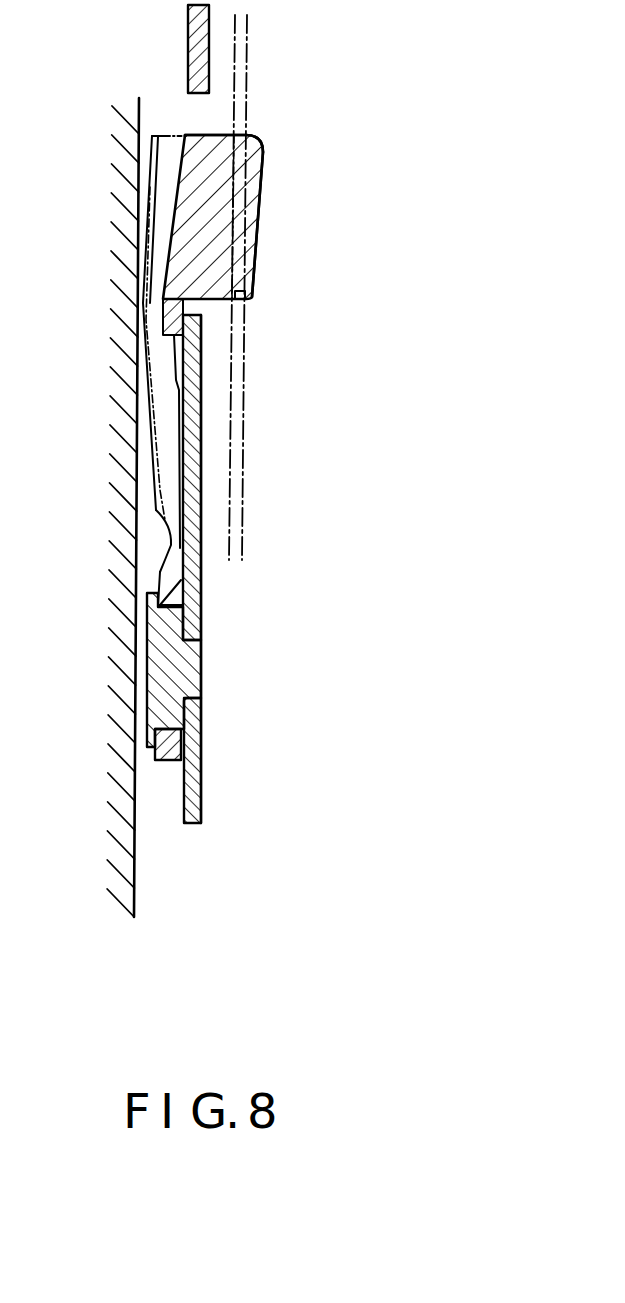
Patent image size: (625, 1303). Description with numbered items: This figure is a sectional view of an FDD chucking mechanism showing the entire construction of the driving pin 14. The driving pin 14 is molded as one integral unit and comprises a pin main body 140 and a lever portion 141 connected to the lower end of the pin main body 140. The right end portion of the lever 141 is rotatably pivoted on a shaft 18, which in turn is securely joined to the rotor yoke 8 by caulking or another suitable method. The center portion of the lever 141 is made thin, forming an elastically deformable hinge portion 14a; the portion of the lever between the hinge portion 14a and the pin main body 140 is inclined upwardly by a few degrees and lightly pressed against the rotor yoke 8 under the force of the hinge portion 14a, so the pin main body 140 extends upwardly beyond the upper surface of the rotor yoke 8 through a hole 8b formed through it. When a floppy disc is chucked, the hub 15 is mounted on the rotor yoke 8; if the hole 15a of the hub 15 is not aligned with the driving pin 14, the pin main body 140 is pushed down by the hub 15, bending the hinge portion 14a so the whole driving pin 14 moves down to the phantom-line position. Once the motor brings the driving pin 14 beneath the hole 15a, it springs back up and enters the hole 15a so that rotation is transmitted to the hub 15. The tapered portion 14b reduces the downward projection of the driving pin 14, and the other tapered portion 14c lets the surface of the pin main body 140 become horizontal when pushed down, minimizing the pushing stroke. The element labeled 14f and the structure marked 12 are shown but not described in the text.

The rotor yoke 8 is at (198, 722).
The hole 8b is at (197, 311).
The wall 12 is at (120, 868).
The driving pin 14 is at (258, 150).
The hinge portion 14a is at (173, 530).
The tapered portion 14b is at (177, 173).
The tapered portion 14c is at (253, 244).
The top face of engaging member 14f is at (240, 134).
The hub 15 is at (236, 407).
The hole 15a is at (244, 291).
The shaft 18 is at (200, 645).
The pin main body 140 is at (243, 193).
The lever portion 141 is at (165, 467).